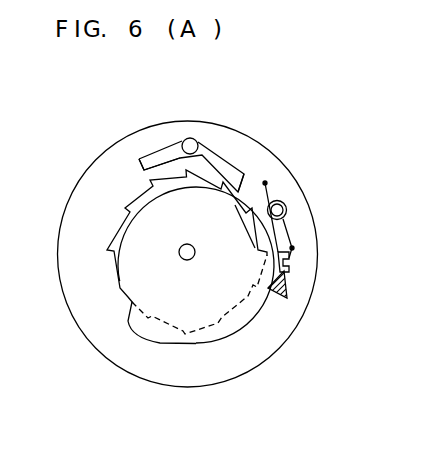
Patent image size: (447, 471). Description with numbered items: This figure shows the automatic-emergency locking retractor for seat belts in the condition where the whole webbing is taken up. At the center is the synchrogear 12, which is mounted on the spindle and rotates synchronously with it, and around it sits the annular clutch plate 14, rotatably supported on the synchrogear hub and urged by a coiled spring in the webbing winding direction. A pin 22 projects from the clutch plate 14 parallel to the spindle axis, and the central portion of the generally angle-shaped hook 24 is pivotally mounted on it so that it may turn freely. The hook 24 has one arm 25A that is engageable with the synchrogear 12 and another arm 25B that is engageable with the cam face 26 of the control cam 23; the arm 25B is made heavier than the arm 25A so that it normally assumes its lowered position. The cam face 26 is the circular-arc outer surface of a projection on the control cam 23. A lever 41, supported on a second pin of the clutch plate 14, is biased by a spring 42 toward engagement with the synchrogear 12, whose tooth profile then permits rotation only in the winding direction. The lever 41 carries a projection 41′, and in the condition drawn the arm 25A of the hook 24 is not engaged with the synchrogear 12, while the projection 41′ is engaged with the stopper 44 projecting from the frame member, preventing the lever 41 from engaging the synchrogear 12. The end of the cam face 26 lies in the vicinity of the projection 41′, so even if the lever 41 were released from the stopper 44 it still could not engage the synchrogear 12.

The synchrogear 12 is at (262, 200).
The clutch plate 14 is at (78, 191).
The pin 22 is at (200, 140).
The control cam 23 is at (197, 285).
The hook 24 is at (197, 127).
The arm 25A is at (242, 172).
The arm 25B is at (143, 157).
The cam face 26 is at (255, 317).
The lever 41 is at (312, 234).
The projection 41′ is at (289, 255).
The spring 42 is at (266, 186).
The stopper 44 is at (287, 290).